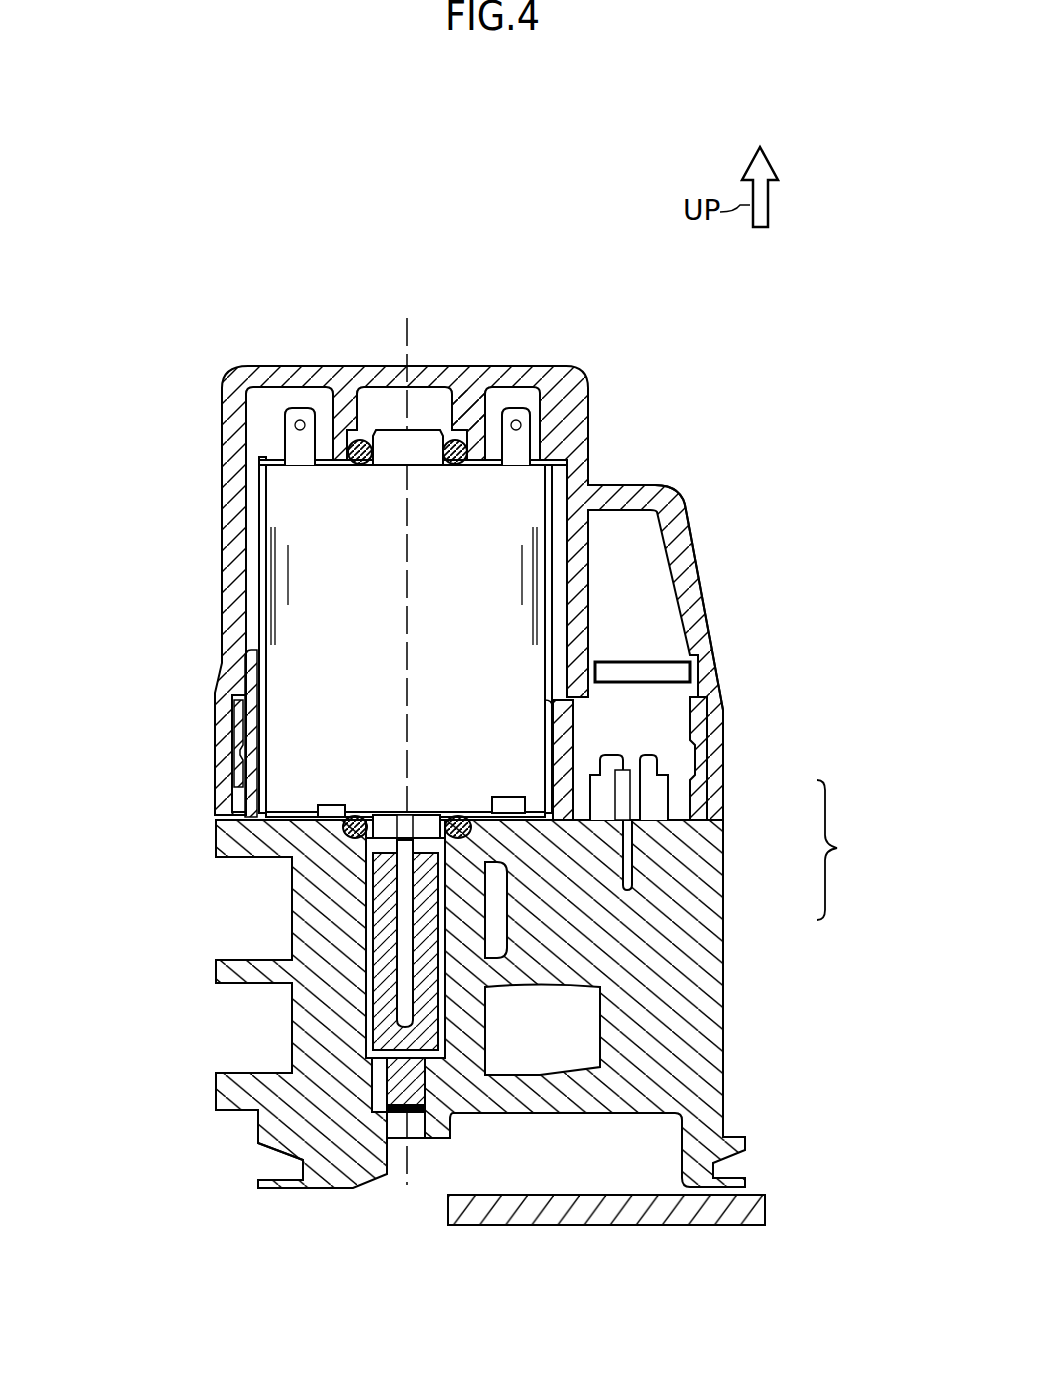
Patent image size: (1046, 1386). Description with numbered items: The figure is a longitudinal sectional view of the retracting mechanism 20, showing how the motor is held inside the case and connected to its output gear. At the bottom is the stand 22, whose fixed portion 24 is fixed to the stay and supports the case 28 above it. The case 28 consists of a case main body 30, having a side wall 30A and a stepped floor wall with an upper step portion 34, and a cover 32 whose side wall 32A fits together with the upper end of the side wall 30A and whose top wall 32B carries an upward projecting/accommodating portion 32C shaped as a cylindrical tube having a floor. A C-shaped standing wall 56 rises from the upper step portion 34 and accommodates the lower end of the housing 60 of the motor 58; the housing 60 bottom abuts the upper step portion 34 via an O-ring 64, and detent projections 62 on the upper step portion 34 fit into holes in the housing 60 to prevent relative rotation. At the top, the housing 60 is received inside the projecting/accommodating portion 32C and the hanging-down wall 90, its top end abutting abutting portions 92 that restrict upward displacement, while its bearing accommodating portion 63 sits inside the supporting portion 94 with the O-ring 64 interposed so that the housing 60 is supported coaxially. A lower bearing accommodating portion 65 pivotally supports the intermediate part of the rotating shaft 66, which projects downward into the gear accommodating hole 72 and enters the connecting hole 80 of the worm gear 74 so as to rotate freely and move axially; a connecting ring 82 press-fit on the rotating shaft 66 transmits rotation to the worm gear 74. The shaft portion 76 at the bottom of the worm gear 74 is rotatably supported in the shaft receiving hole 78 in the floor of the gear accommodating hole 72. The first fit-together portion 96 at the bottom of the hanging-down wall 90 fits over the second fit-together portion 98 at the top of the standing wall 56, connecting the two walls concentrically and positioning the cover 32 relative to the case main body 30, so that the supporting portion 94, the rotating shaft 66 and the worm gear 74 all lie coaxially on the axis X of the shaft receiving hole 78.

The retracting mechanism 20 is at (752, 389).
The stand 22 is at (520, 1226).
The fixed portion 24 is at (608, 1226).
The case 28 is at (849, 850).
The case main body 30 is at (723, 912).
The side wall 30A is at (723, 958).
The cover 32 is at (723, 790).
The side wall 32A is at (221, 430).
The top wall 32B is at (622, 484).
The projecting/accommodating portion 32C is at (284, 365).
The upper step portion 34 is at (300, 813).
The standing wall 56 is at (240, 729).
The motor 58 is at (258, 508).
The housing 60 is at (262, 575).
The detent projections 62 is at (325, 805).
The bearing accommodating portion 63 is at (390, 466).
The O-ring 64 is at (360, 440).
The bearing accommodating portion 65 is at (413, 823).
The rotating shaft 66 is at (367, 843).
The gear accommodating hole 72 is at (383, 1007).
The worm gear 74 is at (395, 1062).
The shaft portion 76 is at (385, 1083).
The shaft receiving hole 78 is at (440, 1105).
The connecting hole 80 is at (400, 940).
The connecting ring 82 is at (422, 838).
The hanging-down wall 90 is at (588, 568).
The abutting portions 92 is at (548, 478).
The supporting portion 94 is at (480, 407).
The first fit-together portion 96 is at (246, 680).
The second fit-together portion 98 is at (244, 668).
The axis X is at (408, 571).